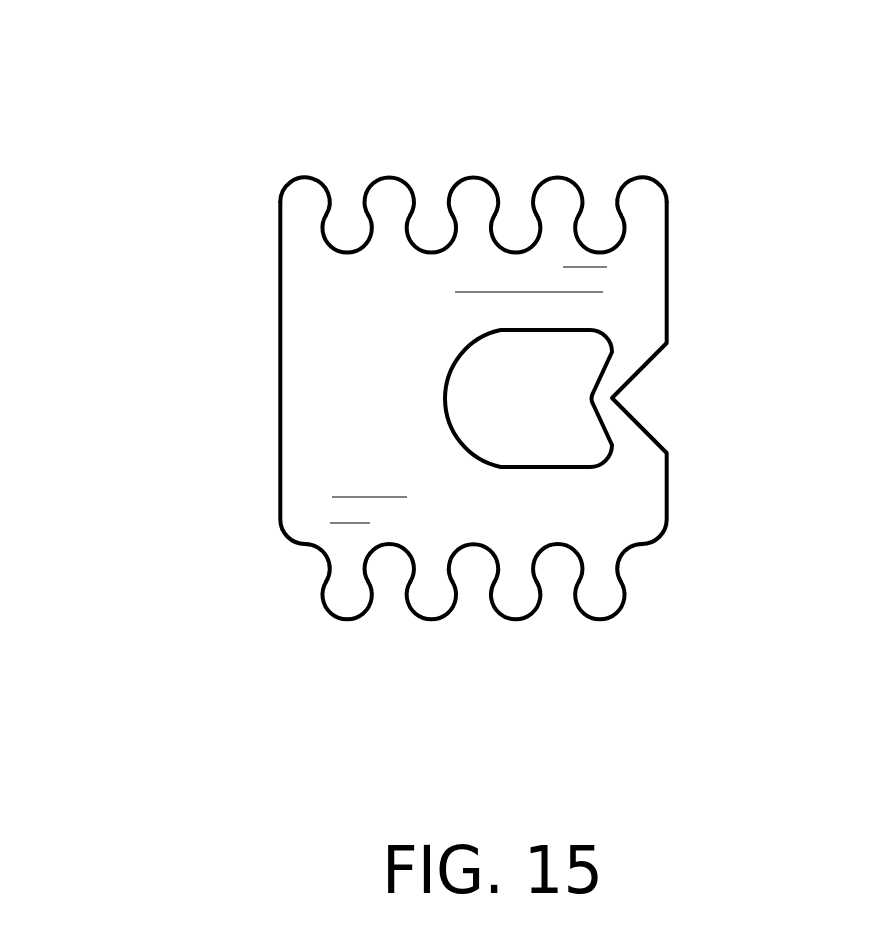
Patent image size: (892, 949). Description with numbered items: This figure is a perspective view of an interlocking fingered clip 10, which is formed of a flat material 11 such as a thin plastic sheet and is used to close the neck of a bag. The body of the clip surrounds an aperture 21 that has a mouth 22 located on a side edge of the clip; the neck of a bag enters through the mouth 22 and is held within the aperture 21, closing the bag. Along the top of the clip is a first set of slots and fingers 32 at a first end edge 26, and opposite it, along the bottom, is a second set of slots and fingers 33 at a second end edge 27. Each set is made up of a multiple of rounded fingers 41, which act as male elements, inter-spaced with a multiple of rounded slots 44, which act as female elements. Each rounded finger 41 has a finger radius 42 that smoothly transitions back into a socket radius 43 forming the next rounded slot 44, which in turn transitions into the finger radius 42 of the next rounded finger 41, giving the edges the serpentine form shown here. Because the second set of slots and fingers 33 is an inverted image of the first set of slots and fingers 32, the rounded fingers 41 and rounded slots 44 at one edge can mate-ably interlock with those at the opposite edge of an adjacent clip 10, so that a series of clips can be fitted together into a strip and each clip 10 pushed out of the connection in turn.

The clip 10 is at (185, 338).
The flat material 11 is at (353, 463).
The aperture 21 is at (551, 375).
The mouth 22 is at (613, 398).
The first end edge 26 is at (452, 229).
The second end edge 27 is at (543, 632).
The first set of slots and fingers 32 is at (485, 205).
The second set of slots and fingers 33 is at (442, 593).
The rounded finger 41 is at (635, 203).
The finger radius 42 is at (567, 225).
The socket radius 43 is at (393, 208).
The rounded slot 44 is at (370, 223).